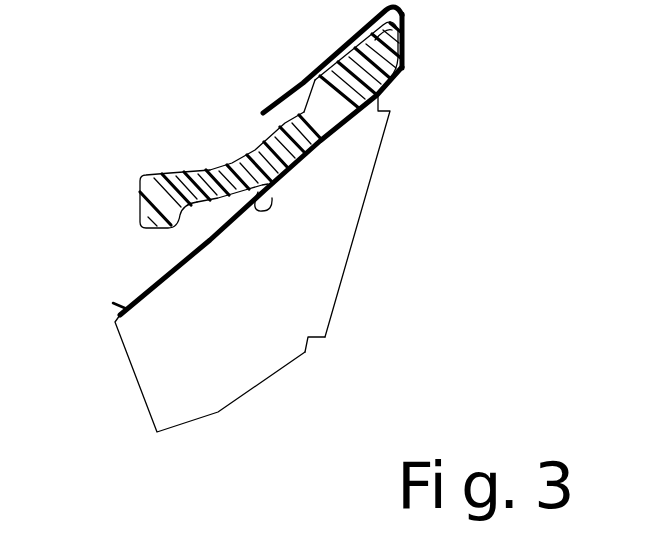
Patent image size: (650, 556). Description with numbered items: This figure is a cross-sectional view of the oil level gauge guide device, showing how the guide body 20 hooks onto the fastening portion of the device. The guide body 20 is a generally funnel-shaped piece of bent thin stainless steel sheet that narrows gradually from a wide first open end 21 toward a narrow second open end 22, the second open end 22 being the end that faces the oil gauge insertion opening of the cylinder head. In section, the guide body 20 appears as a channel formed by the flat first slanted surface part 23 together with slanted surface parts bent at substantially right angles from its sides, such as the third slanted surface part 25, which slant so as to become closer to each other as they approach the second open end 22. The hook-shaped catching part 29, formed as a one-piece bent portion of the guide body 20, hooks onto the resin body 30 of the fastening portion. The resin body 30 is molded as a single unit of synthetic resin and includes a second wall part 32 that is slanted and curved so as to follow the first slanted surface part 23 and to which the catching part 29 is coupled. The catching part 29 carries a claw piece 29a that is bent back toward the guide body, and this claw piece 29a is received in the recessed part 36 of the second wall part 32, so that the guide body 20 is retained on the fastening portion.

The guide body 20 is at (407, 67).
The first open end 21 is at (361, 213).
The second open end 22 is at (137, 383).
The first slanted surface part 23 is at (212, 245).
The third slanted surface part 25 is at (308, 290).
The catching part 29 is at (404, 28).
The claw piece 29a is at (280, 103).
The resin body 30 is at (139, 200).
The second wall part 32 is at (258, 153).
The recessed part 36 is at (308, 72).